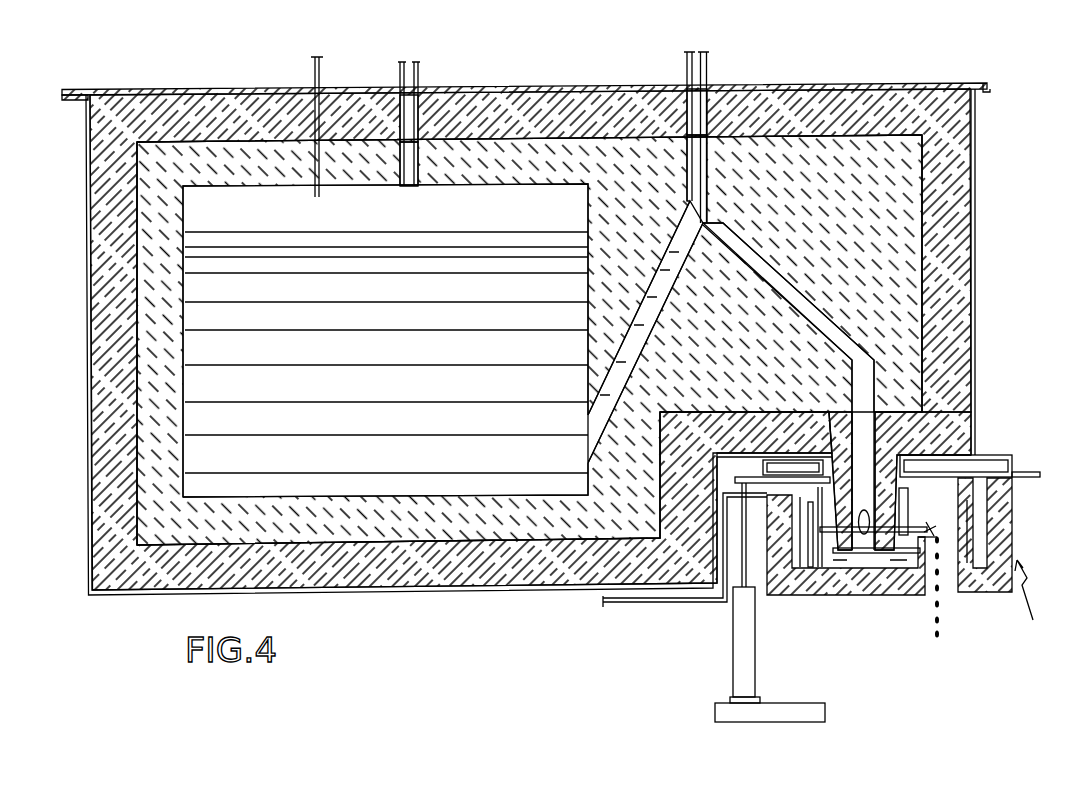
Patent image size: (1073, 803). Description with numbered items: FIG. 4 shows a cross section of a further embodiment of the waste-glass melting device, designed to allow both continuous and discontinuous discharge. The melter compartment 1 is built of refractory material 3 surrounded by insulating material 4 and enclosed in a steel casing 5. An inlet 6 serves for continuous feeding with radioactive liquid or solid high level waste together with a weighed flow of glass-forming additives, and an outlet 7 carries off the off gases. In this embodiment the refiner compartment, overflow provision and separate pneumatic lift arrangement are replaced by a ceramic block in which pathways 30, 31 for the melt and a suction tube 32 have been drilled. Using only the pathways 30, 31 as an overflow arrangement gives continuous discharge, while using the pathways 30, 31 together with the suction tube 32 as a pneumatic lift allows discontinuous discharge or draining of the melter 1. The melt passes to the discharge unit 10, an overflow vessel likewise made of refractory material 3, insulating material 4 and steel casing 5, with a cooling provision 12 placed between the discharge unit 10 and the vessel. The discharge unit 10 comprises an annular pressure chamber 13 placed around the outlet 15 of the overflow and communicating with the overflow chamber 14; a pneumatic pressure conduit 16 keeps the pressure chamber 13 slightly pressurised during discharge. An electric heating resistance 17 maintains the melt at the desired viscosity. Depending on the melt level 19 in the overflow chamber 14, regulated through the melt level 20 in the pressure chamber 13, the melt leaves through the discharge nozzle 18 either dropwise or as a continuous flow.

The melter compartment 1 is at (217, 207).
The refractory material 3 is at (167, 363).
The insulating material 4 is at (108, 325).
The steel casing 5 is at (977, 192).
The inlet 6 is at (315, 72).
The outlet for off gases 7 is at (420, 72).
The discharge unit 10 is at (1032, 600).
The cooling provision 12 is at (987, 453).
The pressure chamber 13 is at (815, 582).
The overflow chamber 14 is at (893, 555).
The outlet of the overflow 15 is at (888, 533).
The pneumatic pressure conduit 16 is at (627, 606).
The electric heating resistance 17 is at (968, 522).
The discharge nozzle 18 is at (933, 522).
The melt level in the overflow chamber 19 is at (864, 534).
The melt level in the pressure chamber 20 is at (908, 518).
The pathway for the melt 30 is at (637, 347).
The pathway for the melt 31 is at (800, 307).
The suction tube 32 is at (707, 148).